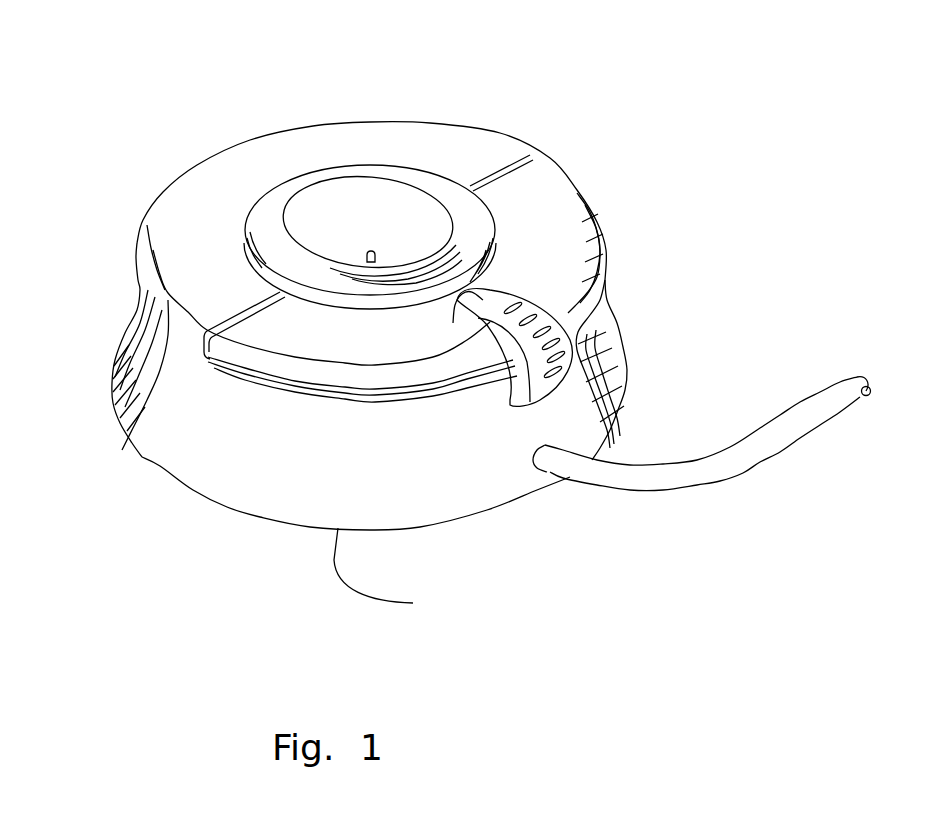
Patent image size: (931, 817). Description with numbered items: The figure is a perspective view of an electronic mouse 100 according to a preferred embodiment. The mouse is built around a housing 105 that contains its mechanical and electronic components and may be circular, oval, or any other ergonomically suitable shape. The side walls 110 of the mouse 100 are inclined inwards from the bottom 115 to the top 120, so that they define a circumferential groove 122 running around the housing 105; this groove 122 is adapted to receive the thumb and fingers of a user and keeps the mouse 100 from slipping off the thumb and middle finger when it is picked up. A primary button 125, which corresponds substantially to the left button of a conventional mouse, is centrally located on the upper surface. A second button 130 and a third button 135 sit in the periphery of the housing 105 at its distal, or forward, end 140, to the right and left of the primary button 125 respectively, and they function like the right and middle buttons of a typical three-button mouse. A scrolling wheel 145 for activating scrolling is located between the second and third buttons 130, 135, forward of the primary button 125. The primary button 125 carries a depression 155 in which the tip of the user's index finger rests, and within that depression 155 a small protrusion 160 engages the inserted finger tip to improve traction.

The electronic mouse 100 is at (222, 541).
The housing 105 is at (122, 461).
The side walls 110 is at (640, 332).
The bottom 115 is at (396, 571).
The top 120 is at (199, 223).
The circumferential groove 122 is at (137, 306).
The primary button 125 is at (440, 168).
The second button 130 is at (546, 213).
The third button 135 is at (384, 319).
The distal end 140 is at (638, 307).
The scrolling wheel 145 is at (557, 285).
The depression 155 is at (329, 216).
The small protrusion 160 is at (370, 225).